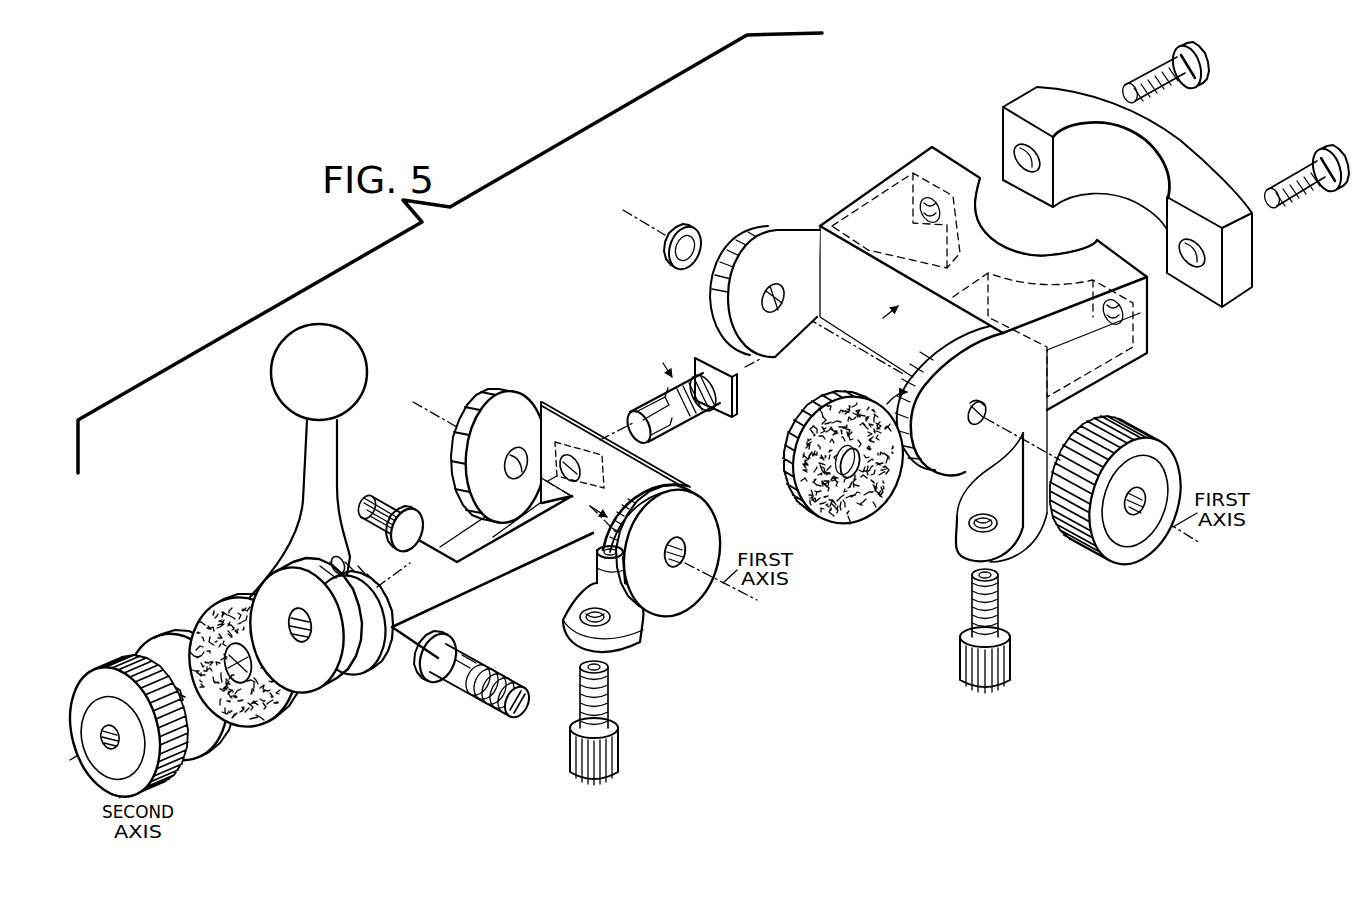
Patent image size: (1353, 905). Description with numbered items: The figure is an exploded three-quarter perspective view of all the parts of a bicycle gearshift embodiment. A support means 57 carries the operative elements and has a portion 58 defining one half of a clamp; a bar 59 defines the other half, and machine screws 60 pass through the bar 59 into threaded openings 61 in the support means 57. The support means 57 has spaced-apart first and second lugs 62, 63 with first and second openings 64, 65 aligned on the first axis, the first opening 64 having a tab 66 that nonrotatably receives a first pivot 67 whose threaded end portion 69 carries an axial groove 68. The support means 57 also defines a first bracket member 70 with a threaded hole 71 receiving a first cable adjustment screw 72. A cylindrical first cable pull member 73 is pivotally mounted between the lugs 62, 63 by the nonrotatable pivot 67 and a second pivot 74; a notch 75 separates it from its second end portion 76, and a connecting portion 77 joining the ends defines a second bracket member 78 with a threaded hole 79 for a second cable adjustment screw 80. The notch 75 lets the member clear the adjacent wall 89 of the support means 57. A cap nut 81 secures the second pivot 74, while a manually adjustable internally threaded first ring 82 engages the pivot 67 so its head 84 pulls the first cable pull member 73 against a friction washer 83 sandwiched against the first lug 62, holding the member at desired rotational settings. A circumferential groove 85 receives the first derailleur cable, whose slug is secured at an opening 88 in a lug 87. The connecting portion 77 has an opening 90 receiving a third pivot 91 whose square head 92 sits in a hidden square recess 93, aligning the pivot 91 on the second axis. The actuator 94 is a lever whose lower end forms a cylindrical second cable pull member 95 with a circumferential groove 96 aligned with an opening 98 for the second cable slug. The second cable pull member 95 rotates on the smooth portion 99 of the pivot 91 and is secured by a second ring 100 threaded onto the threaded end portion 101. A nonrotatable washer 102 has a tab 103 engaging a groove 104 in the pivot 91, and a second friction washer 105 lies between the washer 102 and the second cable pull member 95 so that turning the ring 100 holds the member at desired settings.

The support means 57 is at (860, 195).
The clamp half portion 58 is at (1002, 242).
The bar 59 is at (1187, 153).
The machine screws 60 is at (1142, 70).
The threaded openings 61 is at (920, 202).
The first lug 62 is at (952, 458).
The second lug 63 is at (717, 310).
The first opening 64 is at (987, 412).
The second opening 65 is at (777, 287).
The tab 66 is at (977, 400).
The first pivot 67 is at (457, 697).
The groove 68 is at (507, 683).
The threaded end portion 69 is at (495, 705).
The first bracket member 70 is at (1022, 540).
The threaded hole 71 is at (968, 523).
The first cable adjustment screw 72 is at (1000, 657).
The first cable pull member 73 is at (685, 597).
The second pivot 74 is at (383, 507).
The notch 75 is at (547, 427).
The second end portion 76 is at (488, 413).
The connecting portion 77 is at (660, 440).
The second bracket member 78 is at (627, 637).
The threaded hole 79 is at (580, 613).
The second cable adjustment screw 80 is at (613, 750).
The cap nut 81 is at (680, 227).
The first ring 82 is at (1167, 458).
The friction washer 83 is at (852, 517).
The head 84 is at (447, 635).
The circumferential groove 85 is at (597, 470).
The lug 87 is at (603, 570).
The opening 88 is at (598, 550).
The adjacent wall 89 is at (878, 318).
The opening 90 is at (563, 430).
The third pivot 91 is at (658, 359).
The square head 92 is at (737, 395).
The square recess 93 is at (587, 443).
The actuator 94 is at (293, 393).
The second cable pull member 95 is at (328, 673).
The circumferential groove 96 is at (373, 653).
The opening 98 is at (331, 563).
The smooth portion 99 is at (710, 412).
The second ring 100 is at (183, 765).
The threaded end portion 101 is at (680, 422).
The nonrotatable washer 102 is at (207, 740).
The tab 103 is at (160, 670).
The groove 104 is at (660, 405).
The second friction washer 105 is at (280, 717).